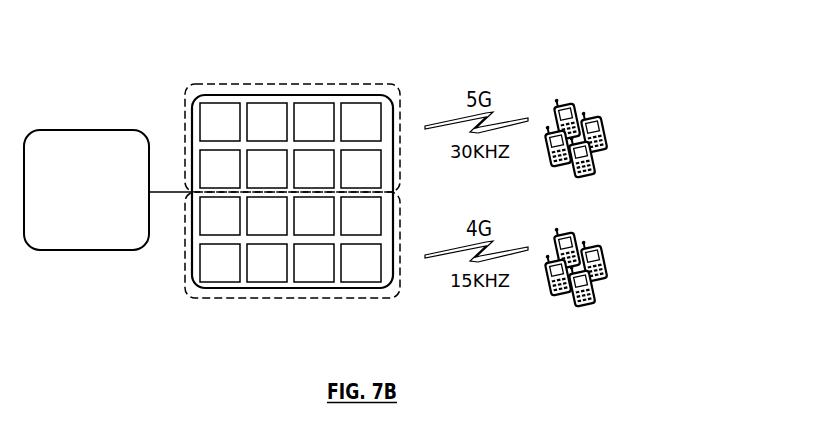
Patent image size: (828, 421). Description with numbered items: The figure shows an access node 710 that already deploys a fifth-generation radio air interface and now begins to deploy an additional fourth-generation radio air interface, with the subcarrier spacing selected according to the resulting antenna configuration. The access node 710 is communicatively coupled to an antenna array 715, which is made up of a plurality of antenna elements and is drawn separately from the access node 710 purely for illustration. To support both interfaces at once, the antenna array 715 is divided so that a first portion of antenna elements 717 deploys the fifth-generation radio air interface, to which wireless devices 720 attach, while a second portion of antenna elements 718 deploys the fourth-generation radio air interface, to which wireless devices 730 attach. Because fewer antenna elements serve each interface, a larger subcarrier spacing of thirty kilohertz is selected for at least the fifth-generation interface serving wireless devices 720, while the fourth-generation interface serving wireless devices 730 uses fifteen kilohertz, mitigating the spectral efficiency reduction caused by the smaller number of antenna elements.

The access node 710 is at (68, 204).
The antenna array 715 is at (293, 92).
The first portion of antenna elements 717 is at (190, 92).
The second portion of antenna elements 718 is at (190, 291).
The wireless devices 720 is at (627, 116).
The wireless devices 730 is at (627, 245).